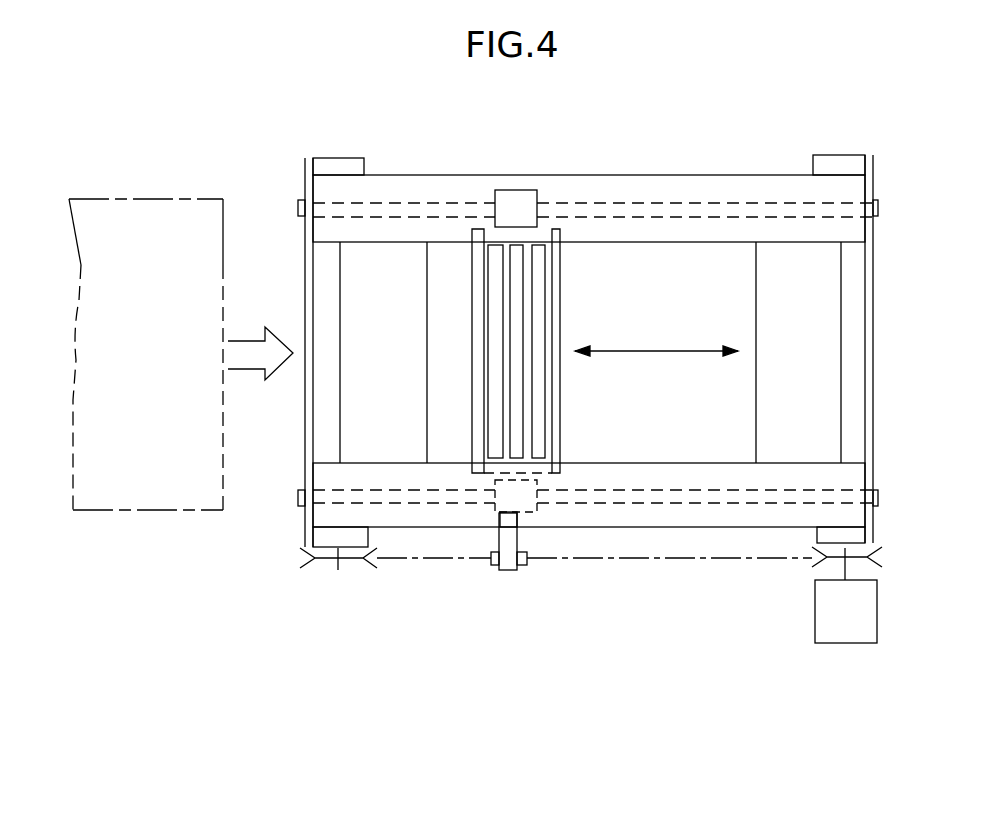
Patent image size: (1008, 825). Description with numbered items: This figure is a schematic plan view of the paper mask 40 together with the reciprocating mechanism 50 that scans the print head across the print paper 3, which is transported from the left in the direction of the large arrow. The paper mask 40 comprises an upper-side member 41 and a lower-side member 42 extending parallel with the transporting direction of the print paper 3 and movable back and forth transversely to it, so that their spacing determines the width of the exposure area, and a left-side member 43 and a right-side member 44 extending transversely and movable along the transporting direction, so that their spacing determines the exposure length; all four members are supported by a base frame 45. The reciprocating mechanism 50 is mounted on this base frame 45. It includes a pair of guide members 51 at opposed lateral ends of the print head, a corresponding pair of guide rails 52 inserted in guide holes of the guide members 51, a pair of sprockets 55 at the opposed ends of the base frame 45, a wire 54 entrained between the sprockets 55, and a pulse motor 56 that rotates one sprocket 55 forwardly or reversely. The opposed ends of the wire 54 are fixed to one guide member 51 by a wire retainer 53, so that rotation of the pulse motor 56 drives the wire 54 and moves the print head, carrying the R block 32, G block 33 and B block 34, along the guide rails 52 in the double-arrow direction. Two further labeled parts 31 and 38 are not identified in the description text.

The print paper 3 is at (192, 199).
The recording head unit 31 is at (549, 351).
The R block 32 is at (497, 305).
The G block 33 is at (518, 282).
The B block 34 is at (540, 343).
The head holder 38 is at (475, 282).
The paper mask 40 is at (732, 175).
The upper-side member 41 is at (643, 175).
The lower-side member 42 is at (735, 463).
The left-side member 43 is at (337, 292).
The right-side member 44 is at (780, 257).
The base frame 45 is at (323, 157).
The reciprocating mechanism 50 is at (586, 606).
The guide member 51 is at (515, 190).
The guide rail 52 is at (402, 202).
The wire retainer 53 is at (495, 568).
The wire 54 is at (640, 557).
The sprocket 55 is at (328, 560).
The pulse motor 56 is at (820, 622).